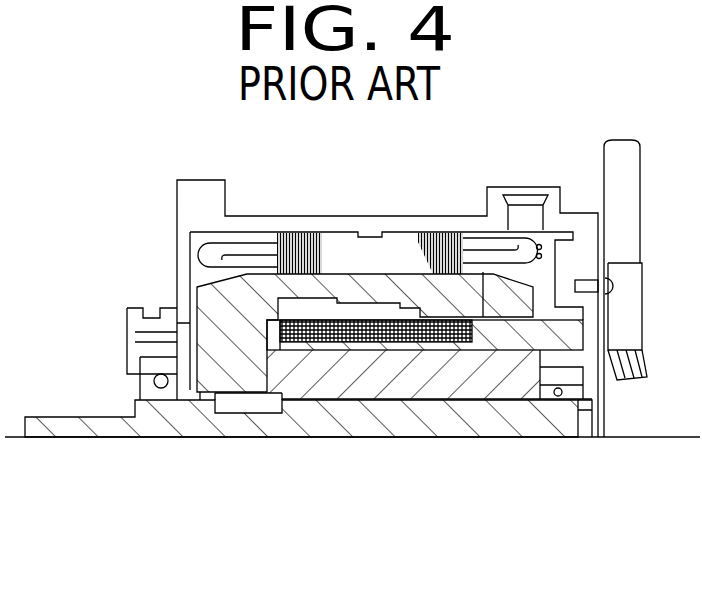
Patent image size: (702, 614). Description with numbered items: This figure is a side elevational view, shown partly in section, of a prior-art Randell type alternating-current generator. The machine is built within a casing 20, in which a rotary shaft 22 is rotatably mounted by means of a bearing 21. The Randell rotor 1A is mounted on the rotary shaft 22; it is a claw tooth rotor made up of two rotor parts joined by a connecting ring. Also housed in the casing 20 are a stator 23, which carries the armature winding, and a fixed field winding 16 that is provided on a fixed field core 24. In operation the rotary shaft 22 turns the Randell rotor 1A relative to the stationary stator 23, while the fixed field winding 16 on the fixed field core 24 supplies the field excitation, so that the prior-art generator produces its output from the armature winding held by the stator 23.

The Randell rotor 1A is at (210, 287).
The casing 20 is at (378, 213).
The stator 23 is at (403, 242).
The bearing 21 is at (150, 352).
The rotary shaft 22 is at (95, 417).
The fixed field winding 16 is at (335, 322).
The fixed field core 24 is at (500, 337).